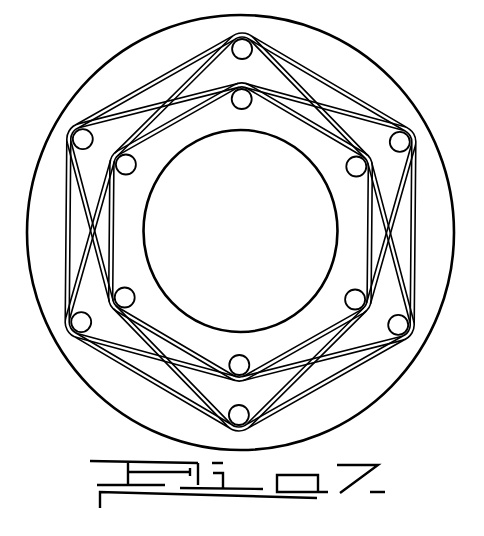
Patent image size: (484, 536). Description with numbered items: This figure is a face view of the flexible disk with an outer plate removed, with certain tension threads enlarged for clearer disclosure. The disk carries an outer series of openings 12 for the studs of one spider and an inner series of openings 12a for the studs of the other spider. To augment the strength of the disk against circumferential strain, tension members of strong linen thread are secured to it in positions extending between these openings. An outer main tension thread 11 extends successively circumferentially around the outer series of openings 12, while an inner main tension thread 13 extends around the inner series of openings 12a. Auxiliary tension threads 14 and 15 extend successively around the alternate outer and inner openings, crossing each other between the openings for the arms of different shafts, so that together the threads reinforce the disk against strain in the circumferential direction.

The outer main tension thread 11 is at (321, 78).
The outer series of openings 12 is at (391, 158).
The inner series of openings 12a is at (355, 180).
The inner main tension thread 13 is at (372, 232).
The auxiliary tension thread 14 is at (348, 139).
The auxiliary tension thread 15 is at (407, 182).